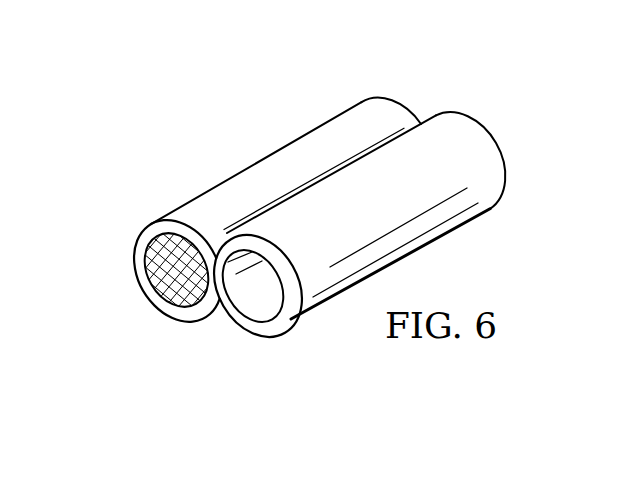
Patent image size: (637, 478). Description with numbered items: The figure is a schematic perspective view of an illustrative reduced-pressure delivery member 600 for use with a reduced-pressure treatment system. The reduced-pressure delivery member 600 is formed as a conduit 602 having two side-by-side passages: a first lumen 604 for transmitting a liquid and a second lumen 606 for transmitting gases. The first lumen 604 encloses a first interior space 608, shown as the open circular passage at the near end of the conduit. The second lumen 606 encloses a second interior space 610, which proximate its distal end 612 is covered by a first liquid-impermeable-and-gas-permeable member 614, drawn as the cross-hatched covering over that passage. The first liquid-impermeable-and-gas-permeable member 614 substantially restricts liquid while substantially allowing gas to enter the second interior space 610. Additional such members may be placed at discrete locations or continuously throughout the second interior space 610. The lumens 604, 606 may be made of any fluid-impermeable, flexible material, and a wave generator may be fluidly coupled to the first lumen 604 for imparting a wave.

The reduced-pressure delivery member 600 is at (276, 223).
The conduit 602 is at (398, 105).
The first lumen 604 is at (458, 122).
The second lumen 606 is at (322, 125).
The first interior space 608 is at (256, 304).
The second interior space 610 is at (181, 287).
The distal end 612 is at (143, 237).
The first liquid-impermeable-and-gas-permeable member 614 is at (143, 280).